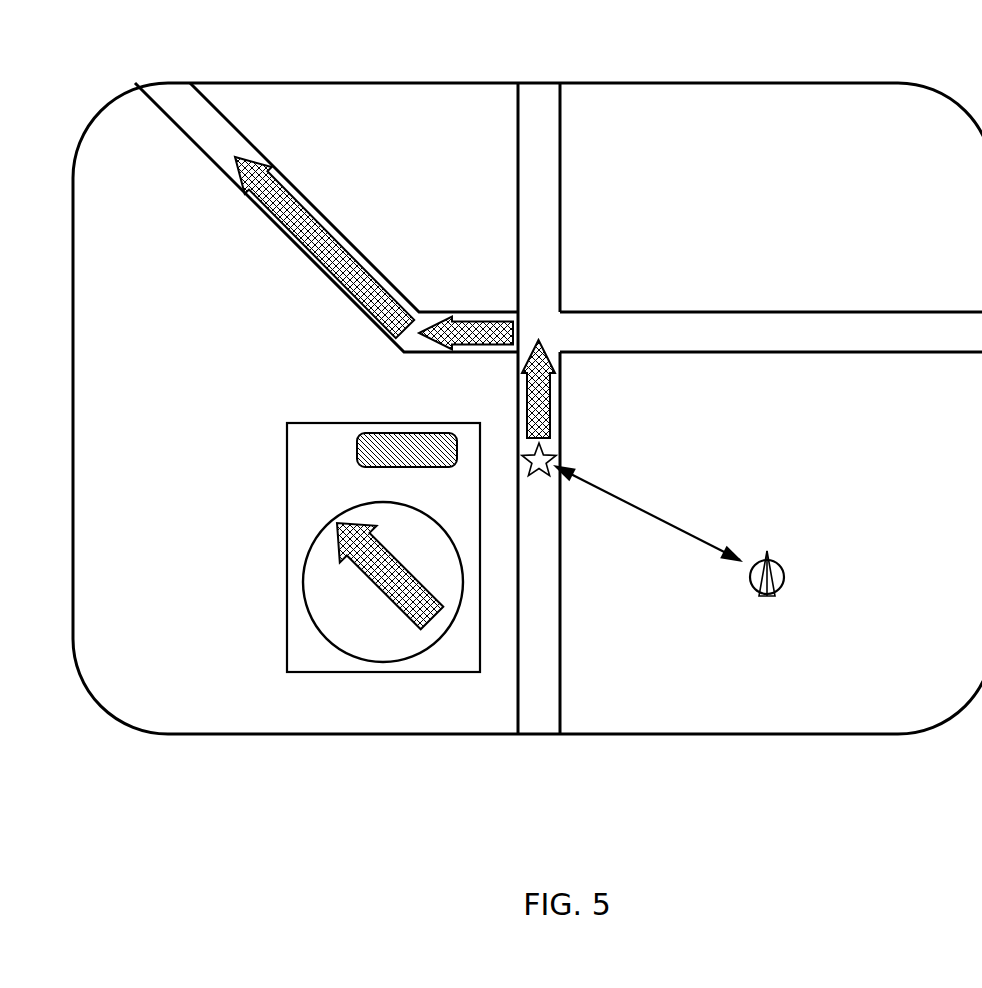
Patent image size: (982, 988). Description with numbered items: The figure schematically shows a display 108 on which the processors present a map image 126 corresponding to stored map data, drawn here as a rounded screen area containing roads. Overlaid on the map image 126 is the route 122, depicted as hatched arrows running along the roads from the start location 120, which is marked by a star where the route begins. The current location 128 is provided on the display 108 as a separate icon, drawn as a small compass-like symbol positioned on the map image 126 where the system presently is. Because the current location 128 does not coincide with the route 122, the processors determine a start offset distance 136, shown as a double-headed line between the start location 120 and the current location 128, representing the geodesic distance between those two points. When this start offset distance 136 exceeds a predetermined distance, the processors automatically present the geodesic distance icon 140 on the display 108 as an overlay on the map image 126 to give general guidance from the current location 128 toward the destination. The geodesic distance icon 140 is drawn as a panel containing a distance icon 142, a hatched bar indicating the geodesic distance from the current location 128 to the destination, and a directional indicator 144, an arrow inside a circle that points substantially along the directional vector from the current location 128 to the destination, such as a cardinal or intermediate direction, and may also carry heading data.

The display 108 is at (170, 83).
The map image 126 is at (792, 104).
The route 122 is at (380, 252).
The start location 120 is at (540, 479).
The start offset distance 136 is at (626, 501).
The current location 128 is at (768, 596).
The geodesic distance icon 140 is at (343, 423).
The distance icon 142 is at (357, 455).
The directional indicator 144 is at (310, 550).